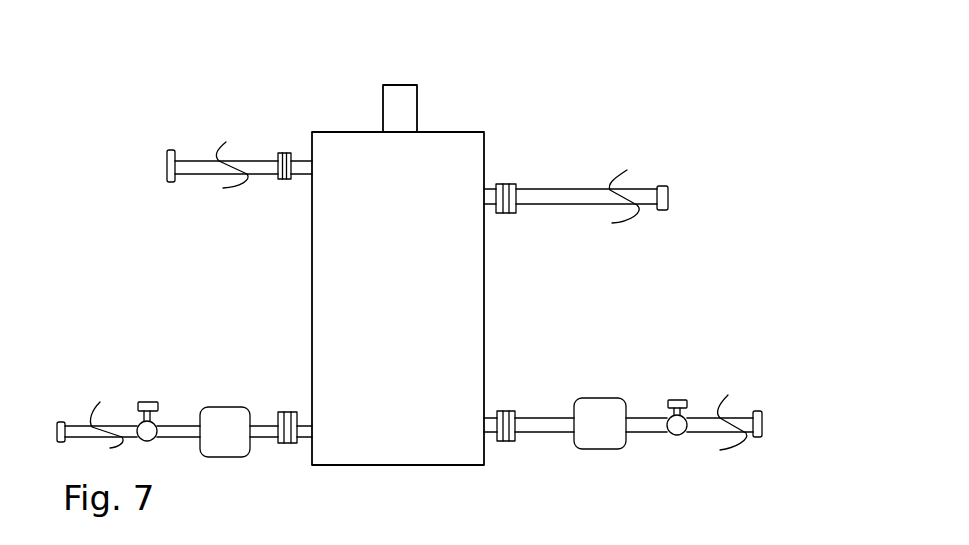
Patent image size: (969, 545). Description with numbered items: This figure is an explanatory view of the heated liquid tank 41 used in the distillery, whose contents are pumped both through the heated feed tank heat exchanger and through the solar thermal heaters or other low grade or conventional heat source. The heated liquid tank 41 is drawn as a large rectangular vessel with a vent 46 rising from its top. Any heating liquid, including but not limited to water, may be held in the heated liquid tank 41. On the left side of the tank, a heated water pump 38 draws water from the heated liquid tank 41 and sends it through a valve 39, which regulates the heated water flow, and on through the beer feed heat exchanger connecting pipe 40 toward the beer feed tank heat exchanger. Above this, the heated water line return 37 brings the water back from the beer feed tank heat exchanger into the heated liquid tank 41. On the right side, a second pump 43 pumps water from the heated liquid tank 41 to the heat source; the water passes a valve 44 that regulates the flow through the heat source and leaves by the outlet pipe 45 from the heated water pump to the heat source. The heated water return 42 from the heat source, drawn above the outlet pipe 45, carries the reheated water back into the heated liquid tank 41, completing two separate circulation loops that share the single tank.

The heated water line return 37 is at (180, 148).
The heated water pump 38 is at (228, 405).
The valve 39 is at (163, 402).
The beer feed heat exchanger connecting pipe 40 is at (63, 415).
The heated liquid tank 41 is at (448, 163).
The heated water return from heat source 42 is at (674, 193).
The pump 43 is at (600, 398).
The valve 44 is at (680, 397).
The outlet pipe 45 is at (763, 414).
The vent 46 is at (420, 75).